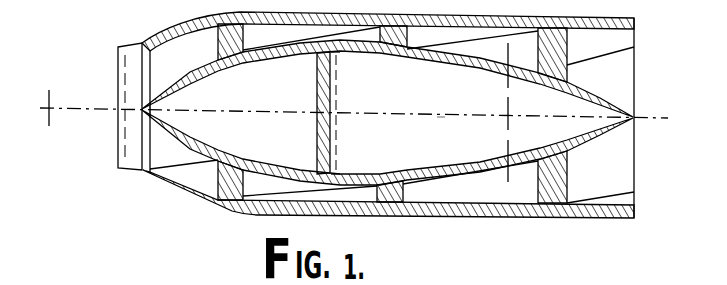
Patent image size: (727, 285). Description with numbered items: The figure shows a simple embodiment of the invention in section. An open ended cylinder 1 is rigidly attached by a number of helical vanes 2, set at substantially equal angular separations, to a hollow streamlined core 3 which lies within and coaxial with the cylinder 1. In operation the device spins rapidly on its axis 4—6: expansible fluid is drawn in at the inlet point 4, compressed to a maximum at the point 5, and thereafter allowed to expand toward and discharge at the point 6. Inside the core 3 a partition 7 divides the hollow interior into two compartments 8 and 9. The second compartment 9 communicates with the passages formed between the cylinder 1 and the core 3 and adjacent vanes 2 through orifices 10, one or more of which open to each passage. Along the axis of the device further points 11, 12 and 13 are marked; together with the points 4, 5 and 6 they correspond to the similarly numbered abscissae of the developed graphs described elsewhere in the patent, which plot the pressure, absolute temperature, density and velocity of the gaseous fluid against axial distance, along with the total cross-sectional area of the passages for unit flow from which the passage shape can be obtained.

The open ended cylinder 1 is at (142, 37).
The helical vanes 2 is at (218, 42).
The hollow streamlined core 3 is at (419, 57).
The fluid inlet point on axis 4 is at (125, 101).
The point of maximum compression 5 is at (339, 110).
The discharge point on axis 6 is at (642, 114).
The partition 7 is at (317, 95).
The first compartment 8 is at (208, 122).
The second compartment 9 is at (440, 131).
The orifices 10 is at (340, 50).
The axial point 11 is at (48, 110).
The axial point 12 is at (150, 133).
The axial point 13 is at (511, 114).